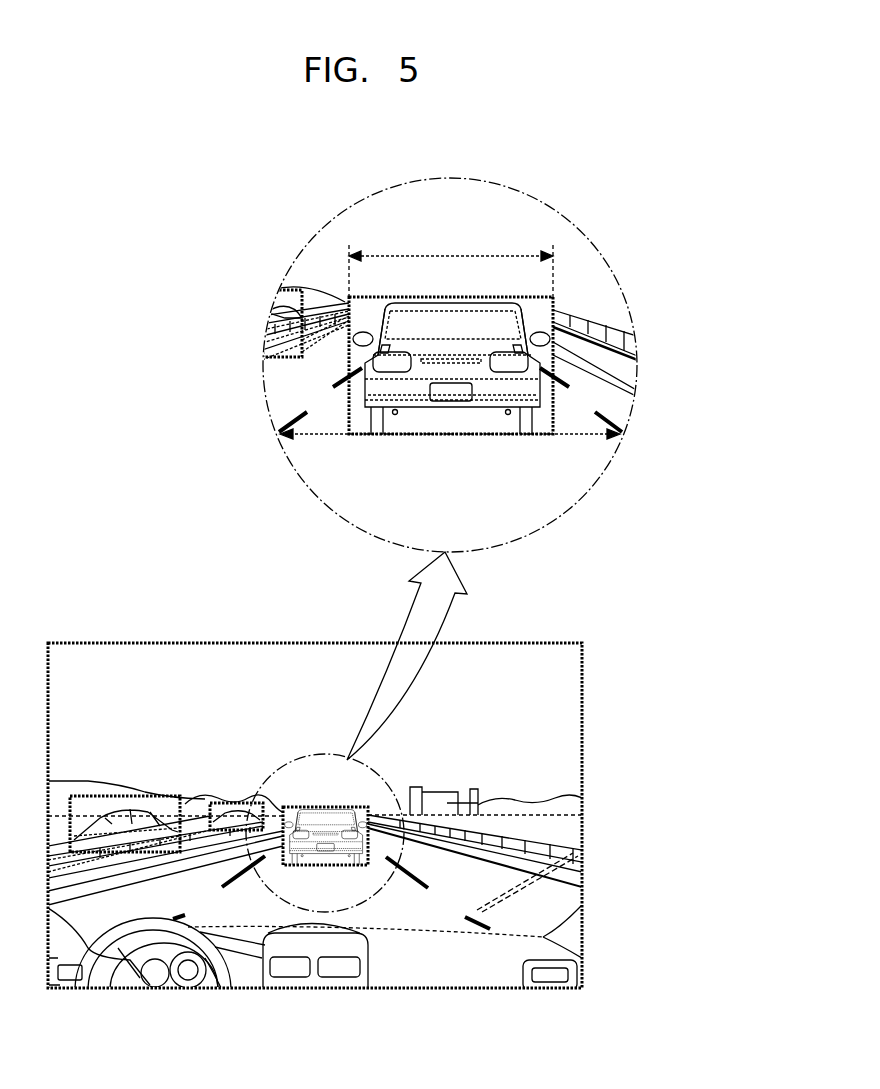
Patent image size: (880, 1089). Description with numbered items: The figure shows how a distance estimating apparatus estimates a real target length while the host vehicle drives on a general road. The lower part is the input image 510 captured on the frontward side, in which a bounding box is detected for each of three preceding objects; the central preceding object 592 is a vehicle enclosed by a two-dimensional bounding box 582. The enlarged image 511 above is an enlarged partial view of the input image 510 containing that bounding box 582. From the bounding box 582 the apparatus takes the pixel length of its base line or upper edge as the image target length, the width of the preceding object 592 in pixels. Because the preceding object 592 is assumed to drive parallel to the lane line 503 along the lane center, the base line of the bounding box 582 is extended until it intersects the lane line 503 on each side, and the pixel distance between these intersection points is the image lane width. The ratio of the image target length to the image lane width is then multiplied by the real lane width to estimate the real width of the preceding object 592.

The lane line 503 is at (233, 880).
The input image 510 is at (505, 642).
The enlarged image 511 is at (451, 178).
The bounding box 582 is at (600, 378).
The preceding object 592 is at (523, 327).